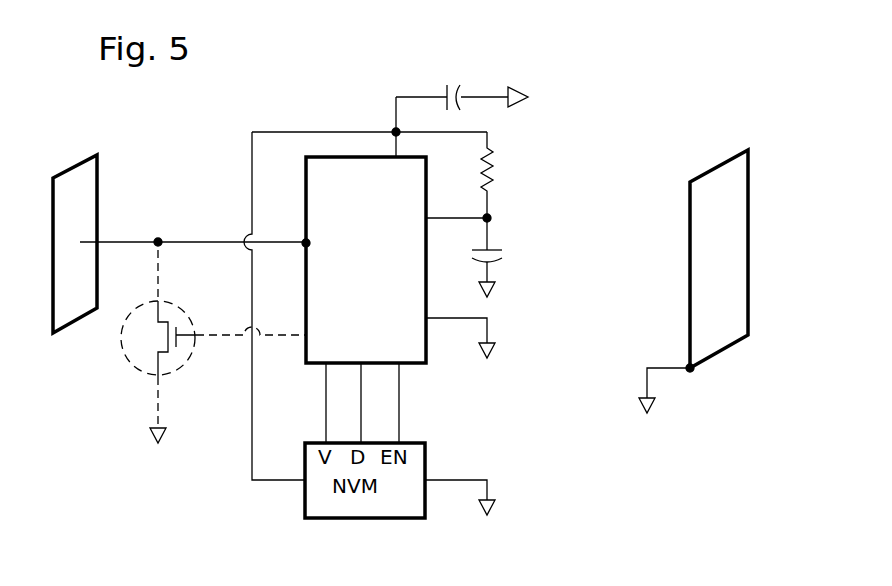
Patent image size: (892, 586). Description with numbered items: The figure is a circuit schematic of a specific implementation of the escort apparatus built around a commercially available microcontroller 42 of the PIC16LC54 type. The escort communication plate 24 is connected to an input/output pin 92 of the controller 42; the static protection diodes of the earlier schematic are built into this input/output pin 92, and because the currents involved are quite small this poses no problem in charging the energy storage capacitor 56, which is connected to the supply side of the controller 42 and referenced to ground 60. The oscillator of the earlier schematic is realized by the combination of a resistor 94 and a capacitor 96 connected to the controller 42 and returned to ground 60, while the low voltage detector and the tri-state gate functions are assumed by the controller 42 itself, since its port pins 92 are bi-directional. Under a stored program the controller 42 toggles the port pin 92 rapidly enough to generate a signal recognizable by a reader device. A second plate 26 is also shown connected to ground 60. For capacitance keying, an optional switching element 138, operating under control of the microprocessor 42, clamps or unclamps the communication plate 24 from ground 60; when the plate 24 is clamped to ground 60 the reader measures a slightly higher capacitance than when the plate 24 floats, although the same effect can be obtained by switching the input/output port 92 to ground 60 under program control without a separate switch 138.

The escort communication plate 24 is at (84, 178).
The second capacitive plate 26 is at (729, 188).
The microcontroller 42 is at (428, 365).
The energy storage capacitor 56 is at (455, 85).
The ground 60 is at (530, 96).
The input/output pin 92 is at (304, 240).
The resistor 94 is at (497, 171).
The capacitor 96 is at (497, 246).
The switching element 138 is at (122, 346).